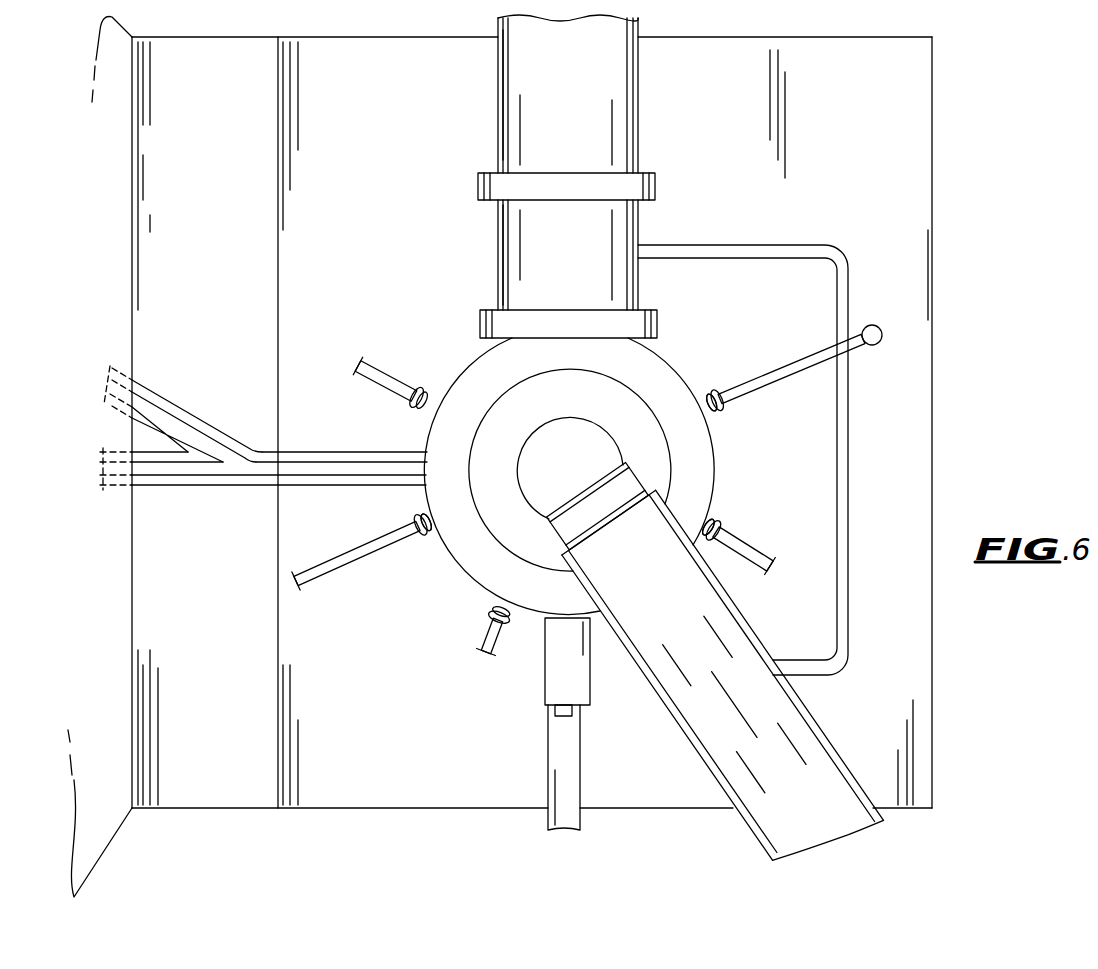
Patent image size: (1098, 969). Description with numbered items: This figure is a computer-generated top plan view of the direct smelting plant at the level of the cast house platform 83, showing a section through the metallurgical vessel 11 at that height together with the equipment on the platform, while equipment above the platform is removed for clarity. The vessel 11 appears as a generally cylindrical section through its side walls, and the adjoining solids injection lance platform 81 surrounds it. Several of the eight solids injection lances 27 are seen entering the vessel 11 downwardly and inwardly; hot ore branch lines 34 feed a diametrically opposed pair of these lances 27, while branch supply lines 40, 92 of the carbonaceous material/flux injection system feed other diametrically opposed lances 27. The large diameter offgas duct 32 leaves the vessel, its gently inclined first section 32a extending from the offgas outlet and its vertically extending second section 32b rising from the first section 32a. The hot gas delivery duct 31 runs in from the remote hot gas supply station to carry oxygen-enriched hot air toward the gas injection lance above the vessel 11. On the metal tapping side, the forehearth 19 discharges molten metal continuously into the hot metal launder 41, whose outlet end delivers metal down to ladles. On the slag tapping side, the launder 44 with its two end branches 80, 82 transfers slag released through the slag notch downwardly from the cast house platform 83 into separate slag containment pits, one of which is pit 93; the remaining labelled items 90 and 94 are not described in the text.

The metallurgical vessel 11 is at (670, 364).
The forehearth 19 is at (545, 680).
The solids injection lance 27 is at (706, 412).
The hot gas delivery duct 31 is at (708, 671).
The offgas duct 32 is at (488, 246).
The first section of offgas duct 32a is at (590, 261).
The second section of offgas duct 32b is at (590, 124).
The branch line 34 is at (786, 370).
The branch supply line 40 is at (488, 640).
The hot metal launder 41 is at (548, 735).
The launder 44 is at (380, 462).
The end branch 80 is at (153, 396).
The solids injection lance platform 81 is at (395, 151).
The end branch 82 is at (158, 473).
The cast house platform 83 is at (235, 151).
The housing wall 90 is at (108, 300).
The branch supply line 92 is at (377, 368).
The slag containment pit 93 is at (512, 59).
The housing floor edge 94 is at (500, 813).